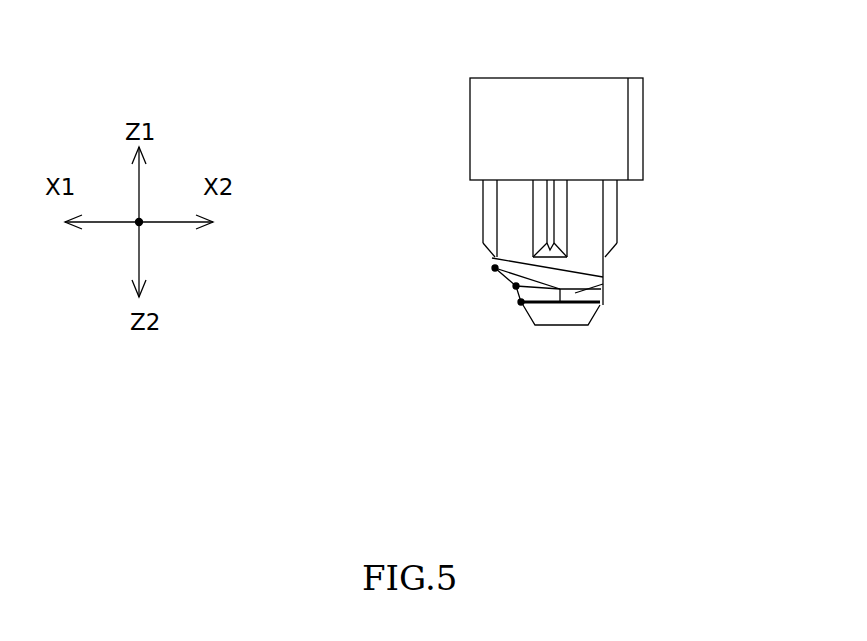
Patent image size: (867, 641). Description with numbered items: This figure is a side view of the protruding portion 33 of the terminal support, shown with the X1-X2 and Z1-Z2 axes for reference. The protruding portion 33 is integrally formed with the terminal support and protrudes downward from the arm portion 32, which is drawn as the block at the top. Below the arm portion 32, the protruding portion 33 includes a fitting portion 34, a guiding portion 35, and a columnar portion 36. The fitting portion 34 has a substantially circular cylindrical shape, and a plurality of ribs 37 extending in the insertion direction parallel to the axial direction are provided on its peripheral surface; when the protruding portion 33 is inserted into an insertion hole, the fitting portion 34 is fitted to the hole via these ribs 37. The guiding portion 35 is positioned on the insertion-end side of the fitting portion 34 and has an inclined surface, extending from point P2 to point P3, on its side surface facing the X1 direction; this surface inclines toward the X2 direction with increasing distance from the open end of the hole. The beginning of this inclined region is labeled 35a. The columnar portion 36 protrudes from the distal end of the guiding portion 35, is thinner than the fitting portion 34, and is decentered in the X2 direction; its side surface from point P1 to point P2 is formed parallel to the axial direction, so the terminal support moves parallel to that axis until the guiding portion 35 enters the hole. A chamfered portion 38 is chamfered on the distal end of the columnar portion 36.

The arm portion 32 is at (487, 130).
The protruding portion 33 is at (437, 58).
The fitting portion 34 is at (590, 208).
The guiding portion 35 is at (603, 277).
The thread start end 35a is at (512, 284).
The columnar portion 36 is at (603, 293).
The ribs 37 is at (533, 207).
The chamfered portion 38 is at (525, 313).
The point P1 is at (519, 304).
The point P2 is at (513, 288).
The point P3 is at (495, 268).